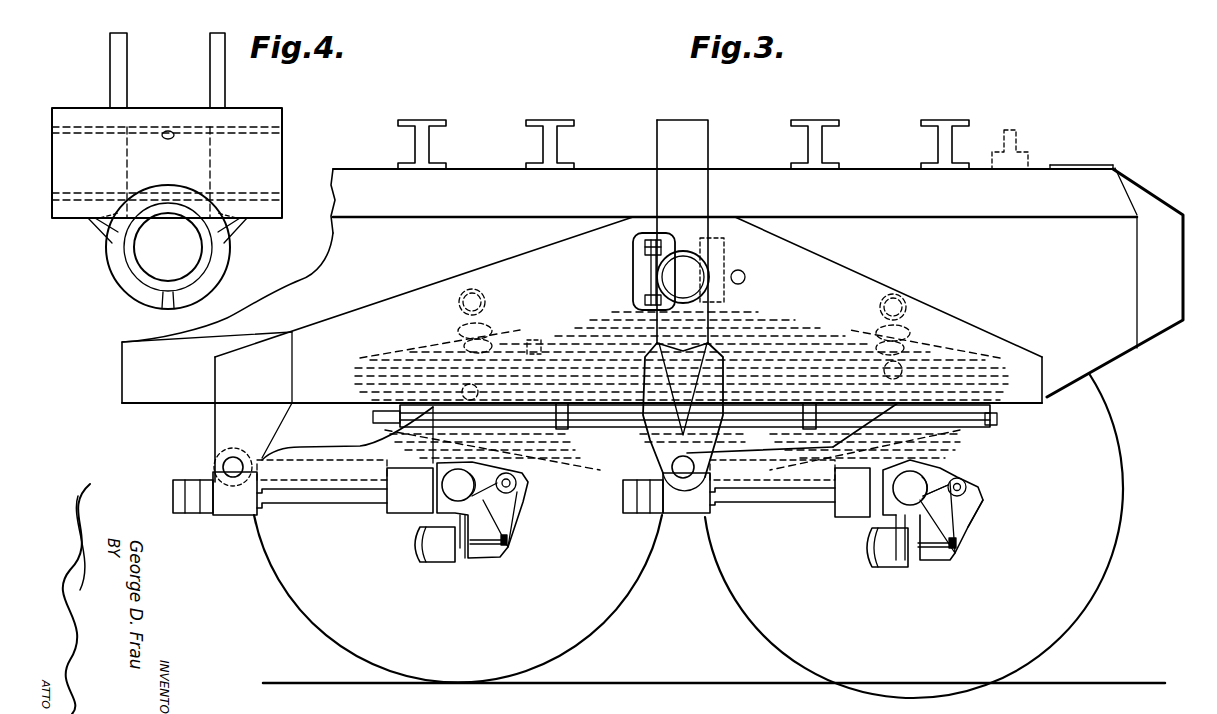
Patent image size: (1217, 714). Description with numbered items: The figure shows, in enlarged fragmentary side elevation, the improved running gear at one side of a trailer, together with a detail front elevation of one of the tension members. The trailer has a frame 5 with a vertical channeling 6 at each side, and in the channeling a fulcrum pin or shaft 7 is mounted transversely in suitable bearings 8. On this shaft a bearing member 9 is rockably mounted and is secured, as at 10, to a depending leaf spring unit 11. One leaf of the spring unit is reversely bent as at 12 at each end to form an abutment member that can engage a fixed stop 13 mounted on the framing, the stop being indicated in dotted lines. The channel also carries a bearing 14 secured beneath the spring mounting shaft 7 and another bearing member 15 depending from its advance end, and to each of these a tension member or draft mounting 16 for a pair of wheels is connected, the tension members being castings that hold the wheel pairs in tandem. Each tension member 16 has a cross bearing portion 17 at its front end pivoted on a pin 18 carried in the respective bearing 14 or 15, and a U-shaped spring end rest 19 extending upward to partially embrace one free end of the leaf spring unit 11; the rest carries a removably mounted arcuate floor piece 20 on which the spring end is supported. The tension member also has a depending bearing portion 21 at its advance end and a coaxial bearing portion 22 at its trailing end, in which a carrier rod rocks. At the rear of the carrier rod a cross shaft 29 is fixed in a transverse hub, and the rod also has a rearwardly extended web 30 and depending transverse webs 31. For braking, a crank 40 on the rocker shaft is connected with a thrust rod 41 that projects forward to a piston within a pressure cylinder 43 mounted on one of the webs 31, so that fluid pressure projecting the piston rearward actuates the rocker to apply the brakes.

In FIG. 3, the frame 5 is at (1078, 178).
In FIG. 3, the vertical channeling 6 is at (828, 273).
In FIG. 3, the fulcrum pin or shaft 7 is at (700, 275).
In FIG. 3, the bearings 8 is at (647, 278).
In FIG. 3, the bearing member 9 is at (640, 265).
In FIG. 3, the securing point 10 is at (660, 440).
In FIG. 3, the leaf spring unit 11 is at (534, 340).
In FIG. 3, the reversely bent leaf end 12 is at (492, 318).
In FIG. 3, the fixed stop 13 is at (466, 290).
In FIG. 3, the bearing 14 is at (637, 514).
In FIG. 3, the bearing member 15 is at (213, 422).
In FIG. 3, the tension member or draft mounting 16 is at (316, 490).
In FIG. 4, the cross bearing portion 17 is at (272, 120).
In FIG. 3, the pin 18 is at (222, 463).
In FIG. 4, the U-shaped spring end rest 19 is at (110, 66).
In FIG. 3, the U-shaped spring end rest 19 is at (432, 405).
In FIG. 3, the arcuate floor piece 20 is at (480, 448).
In FIG. 3, the depending bearing portion 21 is at (228, 514).
In FIG. 3, the bearing portion 22 is at (402, 515).
In FIG. 3, the cross shaft 29 is at (908, 505).
In FIG. 3, the rearwardly extended web 30 is at (970, 527).
In FIG. 3, the depending transverse webs 31 is at (917, 560).
In FIG. 3, the crank 40 is at (960, 515).
In FIG. 3, the thrust rod 41 is at (940, 550).
In FIG. 3, the pressure cylinder 43 is at (440, 550).